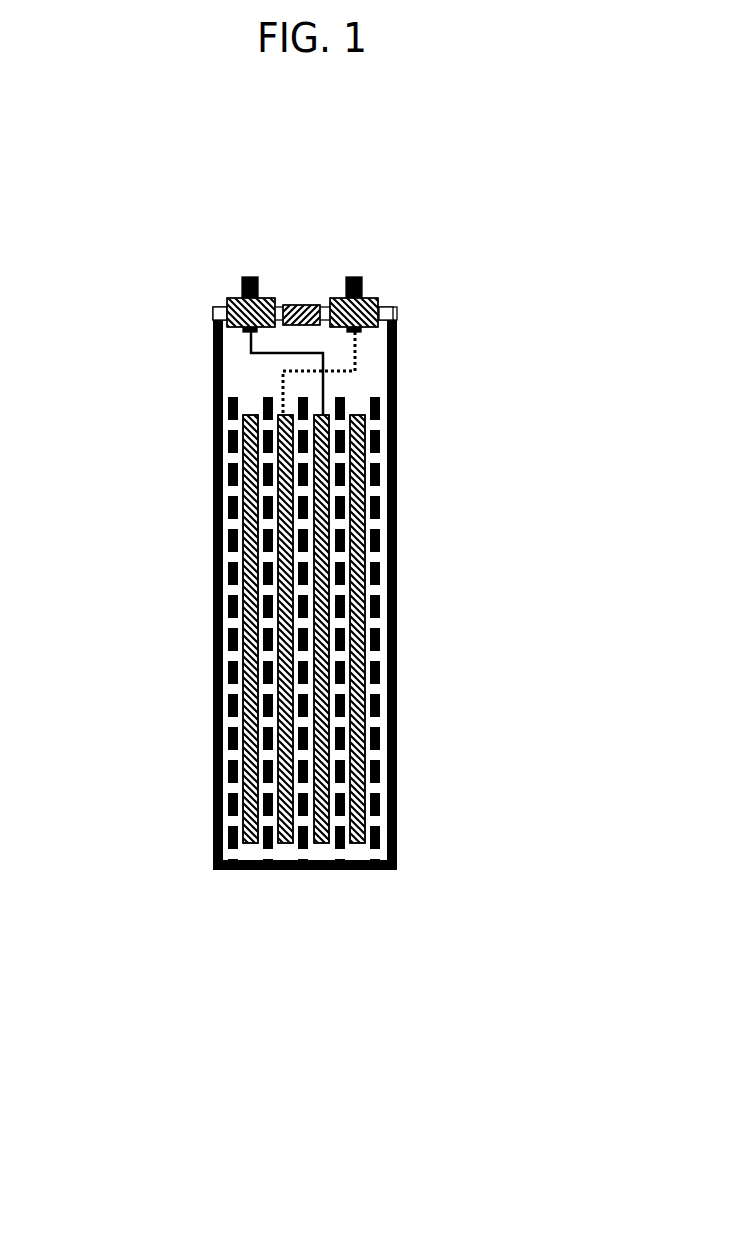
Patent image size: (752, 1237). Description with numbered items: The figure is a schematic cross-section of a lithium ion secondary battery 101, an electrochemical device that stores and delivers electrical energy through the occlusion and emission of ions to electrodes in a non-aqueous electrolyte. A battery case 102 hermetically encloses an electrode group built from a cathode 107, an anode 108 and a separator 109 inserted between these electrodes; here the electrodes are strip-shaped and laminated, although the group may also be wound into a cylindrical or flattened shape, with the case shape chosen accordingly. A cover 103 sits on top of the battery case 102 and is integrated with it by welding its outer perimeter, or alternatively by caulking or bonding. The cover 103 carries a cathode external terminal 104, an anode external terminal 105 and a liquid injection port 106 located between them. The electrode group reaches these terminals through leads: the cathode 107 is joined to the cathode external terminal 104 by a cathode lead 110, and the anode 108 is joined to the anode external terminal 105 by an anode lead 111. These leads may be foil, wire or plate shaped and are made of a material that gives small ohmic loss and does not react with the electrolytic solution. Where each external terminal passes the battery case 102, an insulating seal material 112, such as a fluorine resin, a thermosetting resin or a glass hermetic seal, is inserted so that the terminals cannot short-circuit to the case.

The lithium ion secondary battery 101 is at (57, 567).
The battery case 102 is at (397, 540).
The cover 103 is at (213, 309).
The cathode external terminal 104 is at (252, 277).
The anode external terminal 105 is at (360, 277).
The liquid injection port 106 is at (310, 304).
The cathode 107 is at (253, 843).
The anode 108 is at (286, 845).
The separator 109 is at (215, 757).
The cathode lead 110 is at (251, 366).
The anode lead 111 is at (357, 387).
The insulating seal material 112 is at (225, 303).